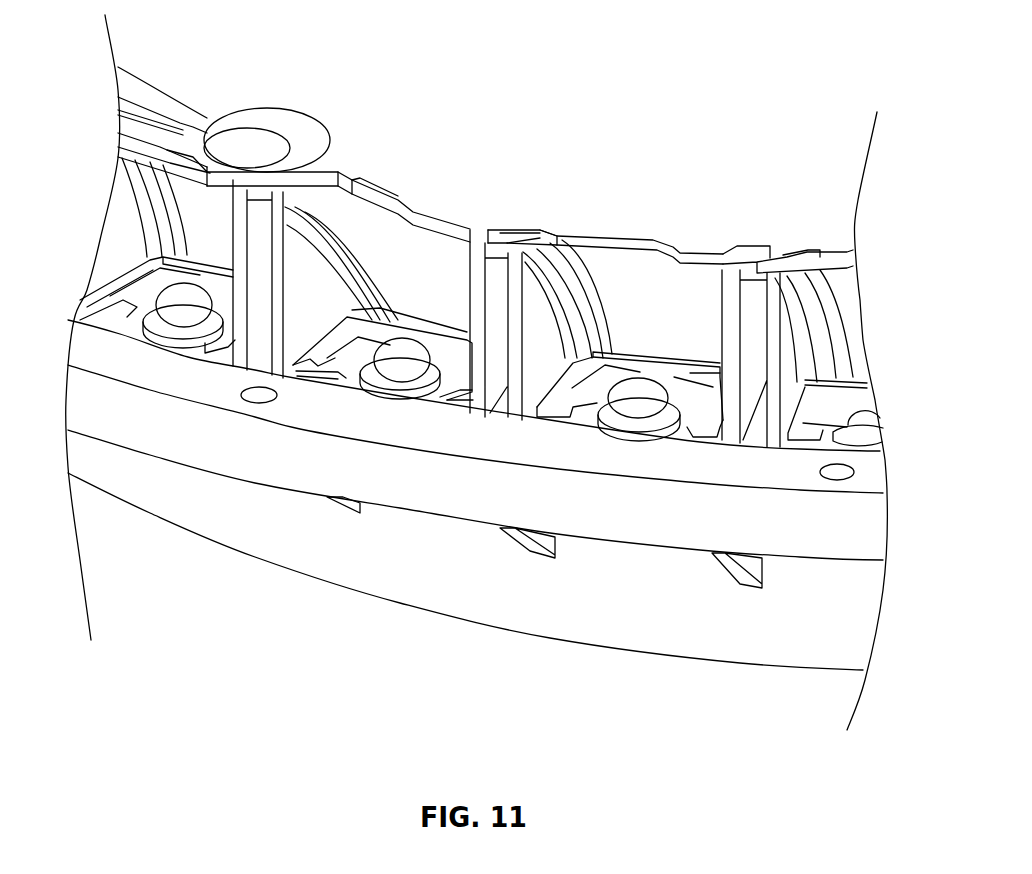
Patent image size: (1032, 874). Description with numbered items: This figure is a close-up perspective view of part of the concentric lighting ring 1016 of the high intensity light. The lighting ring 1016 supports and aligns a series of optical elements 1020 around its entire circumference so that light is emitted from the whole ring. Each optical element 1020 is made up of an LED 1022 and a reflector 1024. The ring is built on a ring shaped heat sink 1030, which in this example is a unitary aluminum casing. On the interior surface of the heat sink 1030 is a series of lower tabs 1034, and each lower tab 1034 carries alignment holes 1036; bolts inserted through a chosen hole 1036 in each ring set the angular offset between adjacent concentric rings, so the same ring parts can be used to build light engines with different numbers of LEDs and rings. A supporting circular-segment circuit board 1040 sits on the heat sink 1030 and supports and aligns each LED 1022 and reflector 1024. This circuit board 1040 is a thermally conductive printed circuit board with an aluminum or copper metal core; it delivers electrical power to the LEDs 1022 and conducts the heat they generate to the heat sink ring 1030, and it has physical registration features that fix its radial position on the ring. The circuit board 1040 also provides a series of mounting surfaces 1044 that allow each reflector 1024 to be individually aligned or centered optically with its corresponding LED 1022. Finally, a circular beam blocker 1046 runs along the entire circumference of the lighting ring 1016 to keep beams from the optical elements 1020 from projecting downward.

The concentric lighting ring 1016 is at (718, 174).
The optical element 1020 is at (648, 240).
The LED 1022 is at (402, 368).
The reflector 1024 is at (417, 207).
The ring shaped heat sink 1030 is at (807, 640).
The lower tab 1034 is at (278, 122).
The alignment hole 1036 is at (233, 127).
The supporting circular-segment circuit board 1040 is at (587, 383).
The mounting surface 1044 is at (674, 377).
The circular beam blocker 1046 is at (217, 387).